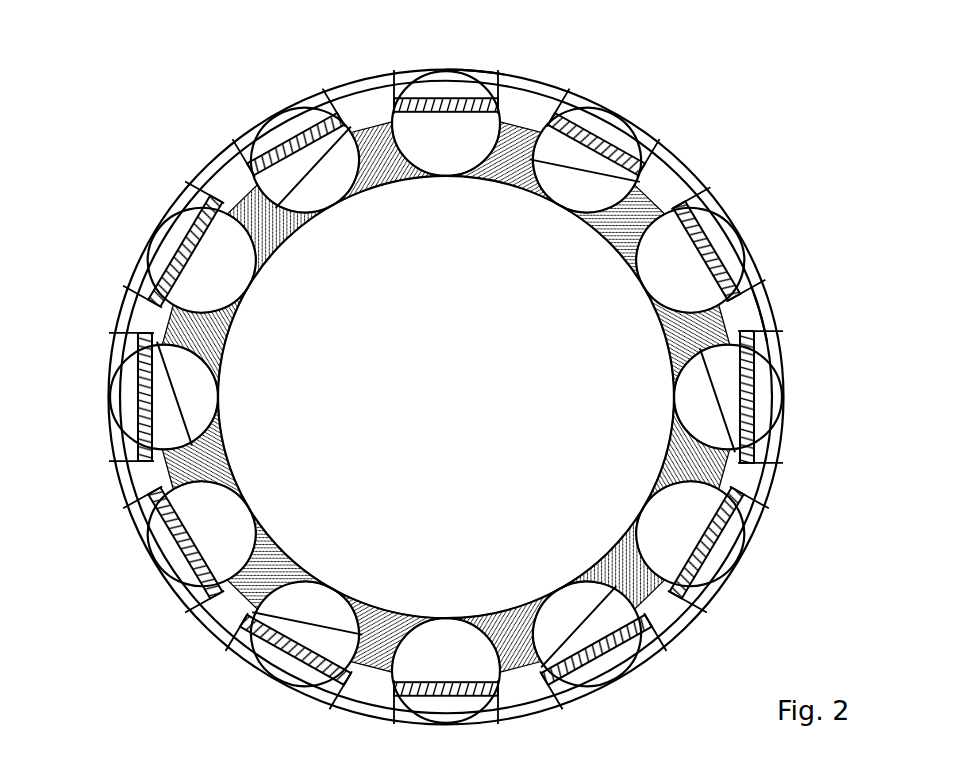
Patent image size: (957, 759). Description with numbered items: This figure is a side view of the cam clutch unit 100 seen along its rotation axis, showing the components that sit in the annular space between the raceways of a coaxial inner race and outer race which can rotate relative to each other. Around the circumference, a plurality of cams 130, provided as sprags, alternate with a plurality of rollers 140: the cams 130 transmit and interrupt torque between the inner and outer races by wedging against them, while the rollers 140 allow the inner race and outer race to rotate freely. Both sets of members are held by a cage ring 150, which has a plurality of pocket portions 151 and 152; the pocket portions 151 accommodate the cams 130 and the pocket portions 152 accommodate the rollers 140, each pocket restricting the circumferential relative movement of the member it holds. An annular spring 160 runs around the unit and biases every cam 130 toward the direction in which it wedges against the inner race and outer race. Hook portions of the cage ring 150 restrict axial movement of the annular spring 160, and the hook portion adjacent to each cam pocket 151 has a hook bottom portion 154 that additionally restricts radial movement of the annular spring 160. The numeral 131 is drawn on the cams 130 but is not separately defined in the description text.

The cam clutch unit 100 is at (164, 94).
The cam 130 is at (292, 140).
The connecting line 131 is at (300, 167).
The roller 140 is at (445, 88).
The cage ring 150 is at (190, 178).
The pocket portion 151 is at (237, 142).
The pocket portion 152 is at (477, 75).
The hook bottom portion 154 is at (733, 313).
The annular spring 160 is at (713, 243).